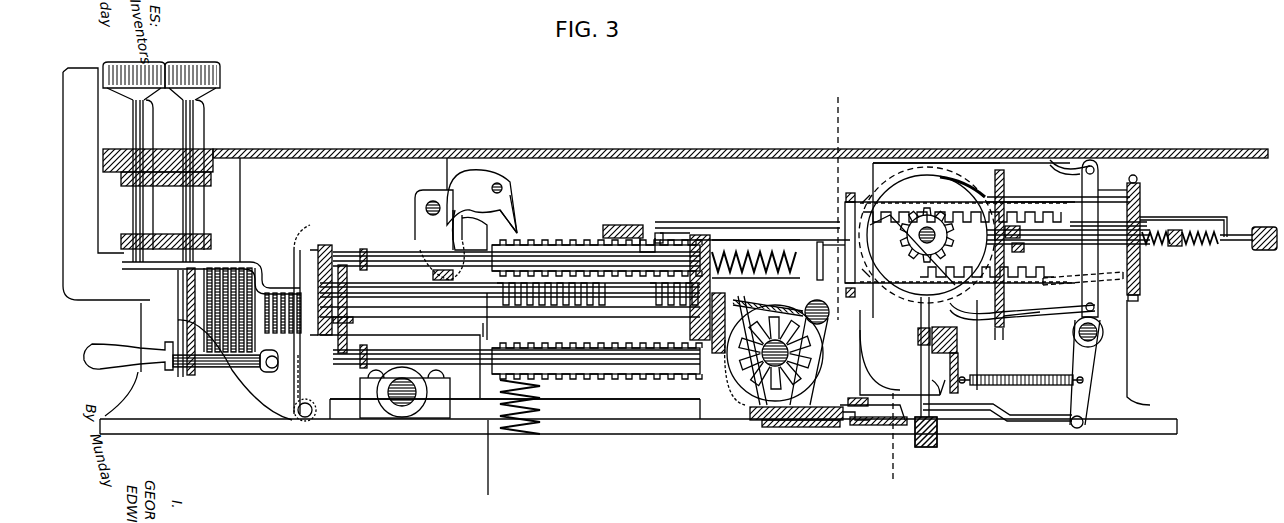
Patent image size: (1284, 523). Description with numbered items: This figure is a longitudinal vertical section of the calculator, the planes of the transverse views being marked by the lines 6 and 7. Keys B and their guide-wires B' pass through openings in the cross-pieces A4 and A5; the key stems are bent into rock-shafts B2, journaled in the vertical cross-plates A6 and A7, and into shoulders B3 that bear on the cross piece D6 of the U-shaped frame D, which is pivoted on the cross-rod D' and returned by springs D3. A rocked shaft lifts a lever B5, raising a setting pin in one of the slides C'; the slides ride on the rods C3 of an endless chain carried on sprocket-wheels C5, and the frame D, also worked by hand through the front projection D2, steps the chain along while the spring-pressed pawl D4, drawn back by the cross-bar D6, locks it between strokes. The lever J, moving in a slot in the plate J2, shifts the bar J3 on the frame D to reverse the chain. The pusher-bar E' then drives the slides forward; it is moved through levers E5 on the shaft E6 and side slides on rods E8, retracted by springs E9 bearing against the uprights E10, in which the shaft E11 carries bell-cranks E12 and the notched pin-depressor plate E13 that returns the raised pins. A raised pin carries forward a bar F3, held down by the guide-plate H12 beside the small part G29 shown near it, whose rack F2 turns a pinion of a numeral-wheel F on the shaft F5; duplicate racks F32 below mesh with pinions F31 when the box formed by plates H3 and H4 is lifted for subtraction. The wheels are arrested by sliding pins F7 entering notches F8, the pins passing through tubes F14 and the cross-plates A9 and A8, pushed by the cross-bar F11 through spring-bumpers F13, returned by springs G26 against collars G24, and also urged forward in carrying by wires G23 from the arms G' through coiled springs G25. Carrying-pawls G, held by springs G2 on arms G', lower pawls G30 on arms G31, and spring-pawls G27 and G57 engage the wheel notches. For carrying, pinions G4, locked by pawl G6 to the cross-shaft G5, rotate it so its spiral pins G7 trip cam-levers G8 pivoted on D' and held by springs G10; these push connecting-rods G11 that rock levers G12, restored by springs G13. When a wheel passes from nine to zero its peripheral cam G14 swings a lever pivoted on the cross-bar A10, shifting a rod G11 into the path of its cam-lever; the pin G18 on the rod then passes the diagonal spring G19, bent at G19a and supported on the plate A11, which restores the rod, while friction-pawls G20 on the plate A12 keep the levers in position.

The cross-piece A4 is at (211, 150).
The cross-piece A5 is at (212, 179).
The stationary vertical cross-plate A6 is at (328, 248).
The stationary vertical cross-plate A7 is at (702, 235).
The rear cross-plate A8 is at (1141, 200).
The second cross-plate A9 is at (1000, 230).
The cross-bar A10 is at (956, 360).
The horizontal plate A11 is at (765, 427).
The plate A12 is at (937, 447).
The digital keys B is at (161, 68).
The guide-wires B' is at (187, 171).
The rock-shafts B2 is at (258, 268).
The shoulders B3 is at (172, 270).
The lever B5 is at (530, 305).
The slides C' is at (597, 331).
The rods C3 is at (375, 252).
The sprocket-wheels C5 is at (350, 328).
The U-shaped frame D is at (517, 314).
The cross-rod D' is at (781, 344).
The front projection D2 is at (151, 184).
The springs D3 is at (533, 410).
The spring-pressed pawl D4 is at (325, 245).
The cross-bar D6 is at (186, 300).
The pusher-bar E' is at (626, 219).
The levers E5 is at (500, 180).
The shaft E6 is at (398, 408).
The rods E8 is at (800, 242).
The springs E9 is at (750, 248).
The uprights E10 is at (415, 205).
The shaft E11 is at (434, 223).
The bell-cranks E12 is at (447, 158).
The pin-depressor plate E13 is at (512, 212).
The numeral-wheels F is at (927, 235).
The racks F2 is at (1010, 226).
The bars F3 is at (735, 238).
The wheel-shaft F5 is at (922, 215).
The sliding pins F7 is at (1085, 222).
The peripheral notches F8 is at (995, 196).
The cross-bar F11 is at (1262, 227).
The spring-bumper F13 is at (1248, 245).
The tubes F14 is at (1080, 230).
The pinions F31 is at (940, 242).
The racks F32 is at (1040, 282).
The carrying-pawls G is at (936, 140).
The arms G' is at (1104, 238).
The springs G2 is at (1085, 165).
The pinions G4 is at (363, 249).
The cross-shaft G5 is at (850, 398).
The spring-pressed pawl G6 is at (950, 380).
The pins G7 is at (770, 370).
The cam-levers G8 is at (875, 360).
The springs G10 is at (740, 385).
The connecting-rods G11 is at (975, 410).
The centrally-pivoted levers G12 is at (1090, 394).
The springs G13 is at (1025, 375).
The peripheral cam G14 is at (905, 172).
The projecting pin G18 is at (860, 427).
The spring G19 is at (920, 388).
The right-angle bend G19a is at (885, 426).
The friction-pawls G20 is at (920, 448).
The wires G23 is at (1160, 217).
The collars G24 is at (1175, 230).
The coiled springs G25 is at (1205, 246).
The springs G26 is at (1160, 246).
The spring-pawls G27 is at (1115, 190).
The block G29 is at (660, 232).
The carrying-pawls G30 is at (1073, 332).
The arms G31 is at (1100, 306).
The spring-pawls G57 is at (1010, 316).
The front plate H3 is at (852, 193).
The rear plate H4 is at (1000, 327).
The guide-plate H12 is at (676, 222).
The shaft I is at (490, 370).
The lever J is at (128, 379).
The plate J2 is at (180, 372).
The bar J3 is at (262, 372).
The section line 6 is at (489, 467).
The section line 7 is at (898, 498).